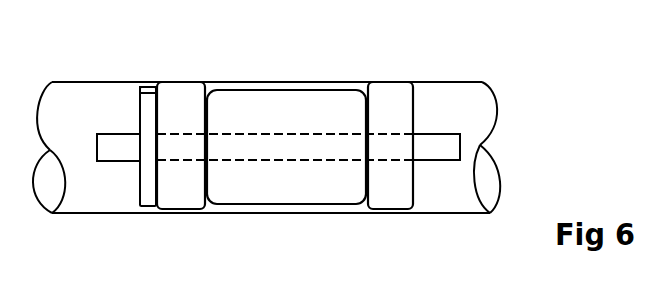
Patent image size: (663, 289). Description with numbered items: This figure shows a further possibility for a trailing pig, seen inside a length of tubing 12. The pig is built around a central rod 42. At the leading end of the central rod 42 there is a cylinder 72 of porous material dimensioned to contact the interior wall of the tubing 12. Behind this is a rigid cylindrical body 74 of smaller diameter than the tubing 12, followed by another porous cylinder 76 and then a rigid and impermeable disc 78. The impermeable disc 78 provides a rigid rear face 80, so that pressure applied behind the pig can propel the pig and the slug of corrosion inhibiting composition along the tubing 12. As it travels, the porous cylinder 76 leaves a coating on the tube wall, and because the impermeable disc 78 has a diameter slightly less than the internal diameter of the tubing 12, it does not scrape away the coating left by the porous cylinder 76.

The tubing 12 is at (278, 82).
The central rod 42 is at (447, 148).
The cylinder of porous material 72 is at (388, 178).
The rigid cylindrical body 74 is at (293, 178).
The porous cylinder 76 is at (183, 190).
The rigid and impermeable disc 78 is at (145, 89).
The rigid rear face 80 is at (140, 175).